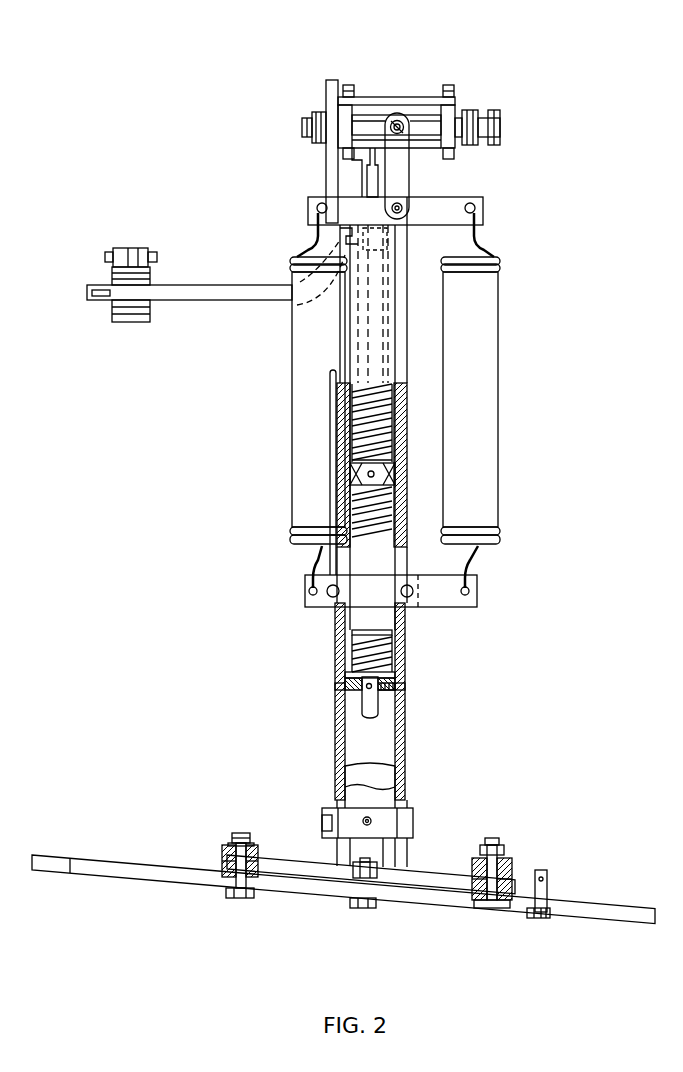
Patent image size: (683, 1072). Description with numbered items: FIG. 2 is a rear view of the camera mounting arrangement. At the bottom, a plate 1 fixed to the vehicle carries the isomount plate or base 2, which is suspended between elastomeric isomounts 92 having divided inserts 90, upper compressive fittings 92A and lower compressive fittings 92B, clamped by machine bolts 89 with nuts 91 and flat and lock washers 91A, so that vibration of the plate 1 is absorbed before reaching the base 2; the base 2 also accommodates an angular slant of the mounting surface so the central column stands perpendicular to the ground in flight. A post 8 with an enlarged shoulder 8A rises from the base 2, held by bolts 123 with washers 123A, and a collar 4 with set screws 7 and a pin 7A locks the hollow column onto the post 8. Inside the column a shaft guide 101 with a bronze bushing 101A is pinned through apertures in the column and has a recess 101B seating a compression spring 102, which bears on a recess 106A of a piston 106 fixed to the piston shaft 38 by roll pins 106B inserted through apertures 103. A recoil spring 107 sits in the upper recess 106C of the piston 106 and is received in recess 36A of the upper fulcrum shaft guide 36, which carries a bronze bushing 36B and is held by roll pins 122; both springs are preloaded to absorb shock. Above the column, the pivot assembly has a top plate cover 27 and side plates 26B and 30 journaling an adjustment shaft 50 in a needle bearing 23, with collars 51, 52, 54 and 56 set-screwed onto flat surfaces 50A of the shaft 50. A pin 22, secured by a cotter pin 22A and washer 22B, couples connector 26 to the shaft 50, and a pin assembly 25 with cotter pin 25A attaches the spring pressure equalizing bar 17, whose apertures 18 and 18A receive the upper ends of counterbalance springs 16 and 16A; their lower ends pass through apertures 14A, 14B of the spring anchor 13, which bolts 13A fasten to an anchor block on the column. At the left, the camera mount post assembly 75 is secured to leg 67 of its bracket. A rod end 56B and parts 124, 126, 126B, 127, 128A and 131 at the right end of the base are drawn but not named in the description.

The plate 1 is at (96, 856).
The isomount plate 2 is at (312, 861).
The collar 4 is at (413, 810).
The set screws 7 is at (372, 821).
The pin 7A is at (328, 818).
The post 8 is at (380, 781).
The enlarged shoulder 8A is at (386, 856).
The spring anchor 13 is at (480, 581).
The bolts 13A is at (404, 594).
The aperture 14A is at (469, 592).
The aperture 14B is at (309, 592).
The spring 16 is at (500, 326).
The spring 16A is at (291, 386).
The spring pressure equalizing bar 17 is at (485, 203).
The aperture 18 is at (475, 214).
The aperture 18A is at (317, 204).
The pin 22 is at (400, 124).
The cotter pin 22A is at (401, 126).
The washer 22B is at (403, 128).
The needle bearing 23 is at (455, 150).
The pin assembly 25 is at (405, 206).
The cotter pin 25A is at (368, 190).
The connector 26 is at (412, 177).
The side plate 26B is at (345, 112).
The top plate cover 27 is at (370, 103).
The side plate 30 is at (500, 135).
The shaft guide 36 is at (316, 214).
The recess 36A is at (360, 237).
The bronze bushing 36B is at (364, 193).
The piston shaft 38 is at (370, 710).
The adjustment shaft 50 is at (425, 128).
The flat surface 50A is at (349, 88).
The collar 51 is at (502, 127).
The collar 52 is at (478, 118).
The collar 54 is at (330, 128).
The collar 56 is at (305, 130).
The right rod 56B is at (480, 225).
The leg 67 is at (200, 301).
The camera mount post assembly 75 is at (127, 248).
The bolt 89 is at (238, 892).
The divided inserts 90 is at (226, 846).
The nut 91 is at (238, 833).
The flat and lock washers 91A is at (258, 846).
The isomount 92 is at (222, 870).
The upper compressive fitting 92A is at (505, 862).
The lower compressive fitting 92B is at (500, 906).
The shaft guide 101 is at (392, 691).
The bronze bushing 101A is at (350, 686).
The recess 101B is at (393, 674).
The spring 102 is at (375, 641).
The apertures 103 is at (401, 441).
The piston 106 is at (378, 475).
The recess 106A is at (392, 486).
The roll pin 106B is at (368, 479).
The upper recess 106C is at (360, 459).
The recoil spring 107 is at (390, 391).
The roll pins 122 is at (357, 204).
The bolts 123 is at (368, 880).
The flat and lock washers 123A is at (355, 882).
The bracket 124 is at (547, 872).
The nut 126 is at (537, 919).
The nut part 126B is at (548, 915).
The nut part 127 is at (550, 919).
The nut 128A is at (550, 911).
The hole 131 is at (545, 880).